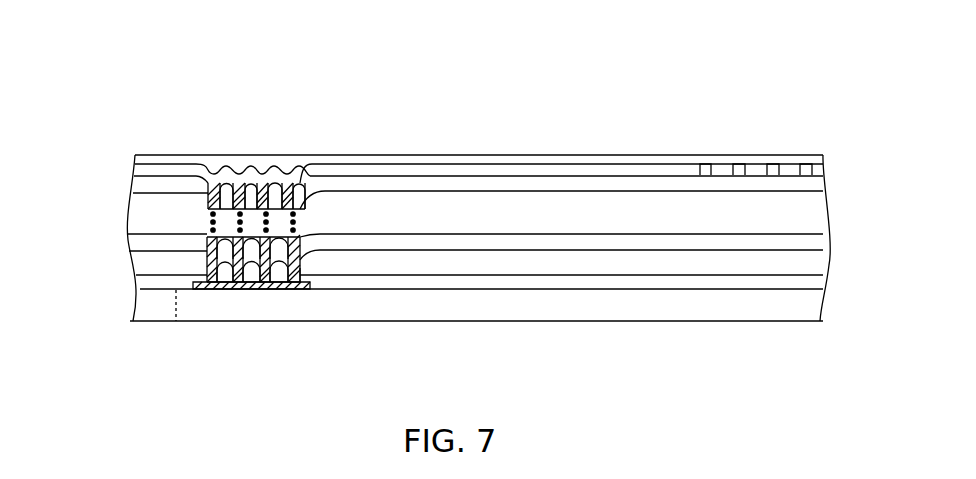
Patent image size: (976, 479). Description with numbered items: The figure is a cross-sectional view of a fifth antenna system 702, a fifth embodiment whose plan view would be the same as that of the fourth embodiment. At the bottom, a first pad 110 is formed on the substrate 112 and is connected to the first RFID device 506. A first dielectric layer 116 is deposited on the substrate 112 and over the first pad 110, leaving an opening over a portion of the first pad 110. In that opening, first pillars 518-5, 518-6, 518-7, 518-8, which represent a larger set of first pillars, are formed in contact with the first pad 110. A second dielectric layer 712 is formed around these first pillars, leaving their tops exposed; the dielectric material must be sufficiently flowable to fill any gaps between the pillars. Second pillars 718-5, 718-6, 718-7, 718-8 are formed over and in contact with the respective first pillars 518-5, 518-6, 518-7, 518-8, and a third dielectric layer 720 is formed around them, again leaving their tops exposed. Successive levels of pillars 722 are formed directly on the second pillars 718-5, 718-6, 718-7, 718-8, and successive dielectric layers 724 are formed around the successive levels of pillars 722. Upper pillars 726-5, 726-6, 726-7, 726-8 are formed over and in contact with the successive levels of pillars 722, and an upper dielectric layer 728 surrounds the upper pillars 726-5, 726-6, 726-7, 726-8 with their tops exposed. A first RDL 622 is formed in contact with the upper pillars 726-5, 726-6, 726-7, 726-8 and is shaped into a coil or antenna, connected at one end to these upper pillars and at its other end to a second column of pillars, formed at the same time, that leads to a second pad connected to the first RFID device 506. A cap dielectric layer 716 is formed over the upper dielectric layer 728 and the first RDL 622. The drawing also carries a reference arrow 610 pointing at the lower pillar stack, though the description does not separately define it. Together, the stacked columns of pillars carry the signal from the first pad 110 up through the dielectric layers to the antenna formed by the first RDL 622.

The fifth antenna system 702 is at (147, 53).
The successive levels of pillars 722 is at (198, 209).
The cap dielectric layer 716 is at (137, 163).
The upper dielectric layer 728 is at (138, 184).
The successive dielectric layers 724 is at (152, 220).
The third dielectric layer 720 is at (135, 246).
The second dielectric layer 712 is at (143, 267).
The first dielectric layer 116 is at (143, 283).
The substrate 112 is at (140, 308).
The first RDL 622 is at (535, 170).
The first RFID device 506 is at (463, 317).
The first pad 110 is at (297, 289).
The interconnect structure 610 is at (318, 273).
The upper pillar 726-5 is at (224, 183).
The upper pillar 726-6 is at (250, 183).
The upper pillar 726-7 is at (273, 183).
The upper pillar 726-8 is at (298, 183).
The second pillar 718-5 is at (218, 228).
The second pillar 718-6 is at (244, 230).
The second pillar 718-7 is at (271, 230).
The second pillar 718-8 is at (297, 230).
The first pillar 518-5 is at (212, 289).
The first pillar 518-6 is at (243, 289).
The first pillar 518-7 is at (267, 289).
The first pillar 518-8 is at (290, 289).